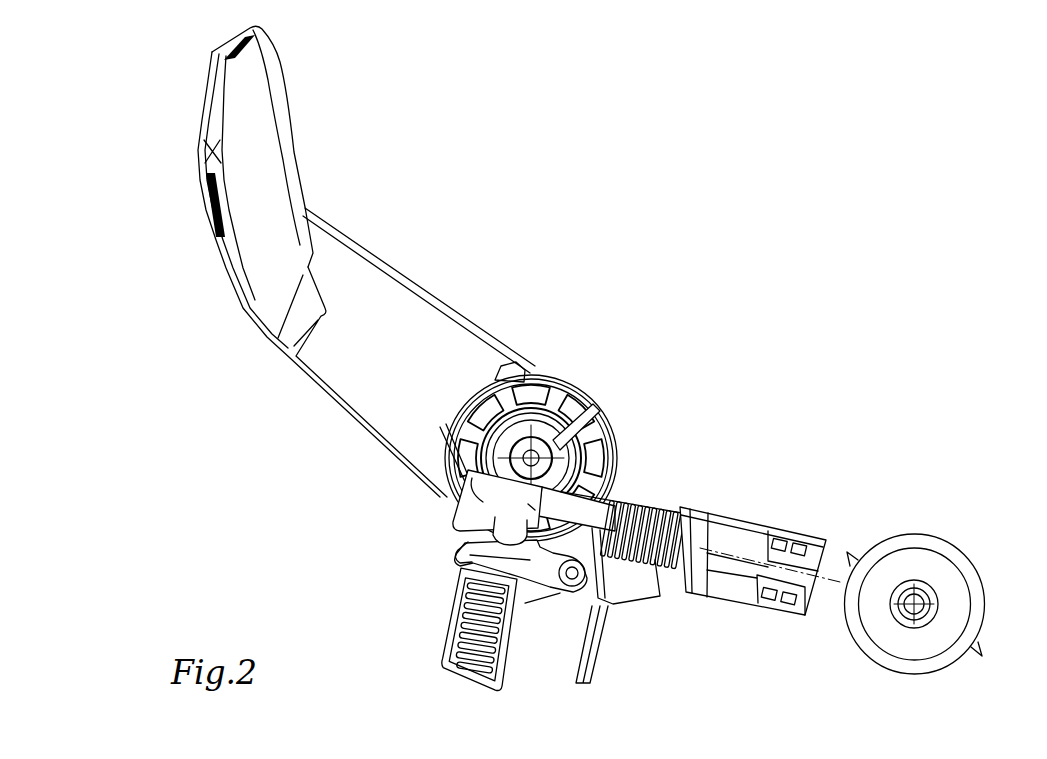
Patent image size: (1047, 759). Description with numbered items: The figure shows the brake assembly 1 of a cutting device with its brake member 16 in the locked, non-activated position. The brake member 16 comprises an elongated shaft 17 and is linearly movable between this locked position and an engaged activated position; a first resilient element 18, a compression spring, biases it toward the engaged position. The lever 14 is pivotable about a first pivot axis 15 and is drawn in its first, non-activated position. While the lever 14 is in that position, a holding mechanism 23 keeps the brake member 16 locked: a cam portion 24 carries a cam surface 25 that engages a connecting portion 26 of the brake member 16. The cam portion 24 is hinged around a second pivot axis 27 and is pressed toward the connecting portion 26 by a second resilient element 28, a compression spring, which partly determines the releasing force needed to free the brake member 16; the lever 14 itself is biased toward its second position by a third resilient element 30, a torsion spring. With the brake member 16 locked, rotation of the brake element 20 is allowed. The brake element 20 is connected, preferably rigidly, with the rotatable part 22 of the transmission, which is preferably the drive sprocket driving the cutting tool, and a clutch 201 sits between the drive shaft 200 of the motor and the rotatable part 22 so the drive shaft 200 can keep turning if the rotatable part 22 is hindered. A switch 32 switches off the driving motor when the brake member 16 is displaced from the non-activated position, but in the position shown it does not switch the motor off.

The brake assembly 1 is at (744, 156).
The lever 14 is at (402, 255).
The first pivot axis 15 is at (455, 442).
The brake member 16 is at (615, 484).
The elongated shaft 17 is at (732, 550).
The first resilient element 18 is at (667, 512).
The brake element 20 is at (937, 548).
The rotatable part 22 is at (952, 592).
The holding mechanism 23 is at (388, 547).
The cam portion 24 is at (520, 560).
The cam surface 25 is at (456, 542).
The connecting portion 26 is at (446, 490).
The second pivot axis 27 is at (582, 586).
The second resilient element 28 is at (460, 597).
The third resilient element 30 is at (596, 408).
The switch 32 is at (630, 582).
The drive shaft 200 is at (905, 583).
The clutch 201 is at (928, 617).